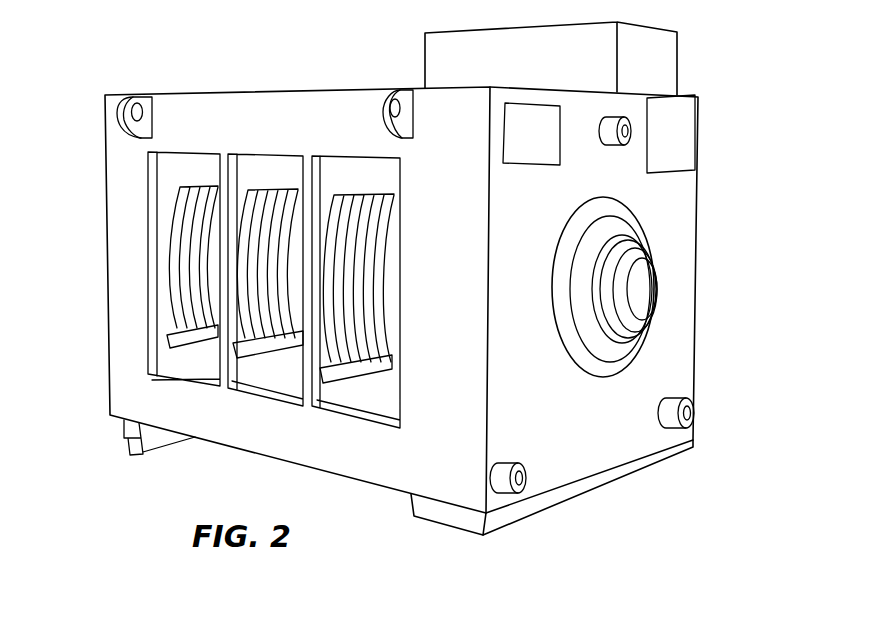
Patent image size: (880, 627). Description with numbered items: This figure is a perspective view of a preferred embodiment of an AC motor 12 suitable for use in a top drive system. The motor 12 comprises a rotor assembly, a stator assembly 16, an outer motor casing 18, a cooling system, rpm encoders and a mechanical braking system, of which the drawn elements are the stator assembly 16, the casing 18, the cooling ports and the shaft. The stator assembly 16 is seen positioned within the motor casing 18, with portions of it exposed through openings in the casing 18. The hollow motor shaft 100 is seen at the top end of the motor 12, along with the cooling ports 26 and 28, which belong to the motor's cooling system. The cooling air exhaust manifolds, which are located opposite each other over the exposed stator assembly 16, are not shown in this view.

The motor 12 is at (239, 49).
The stator assembly 16 is at (190, 253).
The outer motor casing 18 is at (197, 93).
The cooling port 26 is at (532, 118).
The cooling port 28 is at (683, 135).
The hollow motor shaft 100 is at (643, 290).